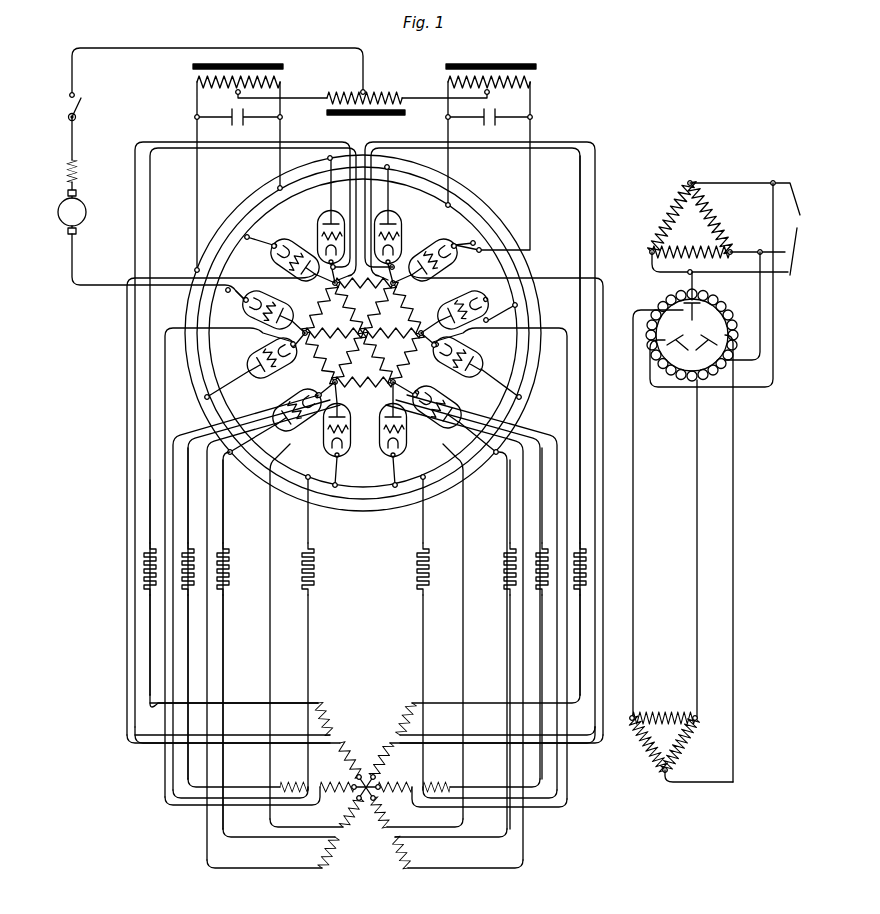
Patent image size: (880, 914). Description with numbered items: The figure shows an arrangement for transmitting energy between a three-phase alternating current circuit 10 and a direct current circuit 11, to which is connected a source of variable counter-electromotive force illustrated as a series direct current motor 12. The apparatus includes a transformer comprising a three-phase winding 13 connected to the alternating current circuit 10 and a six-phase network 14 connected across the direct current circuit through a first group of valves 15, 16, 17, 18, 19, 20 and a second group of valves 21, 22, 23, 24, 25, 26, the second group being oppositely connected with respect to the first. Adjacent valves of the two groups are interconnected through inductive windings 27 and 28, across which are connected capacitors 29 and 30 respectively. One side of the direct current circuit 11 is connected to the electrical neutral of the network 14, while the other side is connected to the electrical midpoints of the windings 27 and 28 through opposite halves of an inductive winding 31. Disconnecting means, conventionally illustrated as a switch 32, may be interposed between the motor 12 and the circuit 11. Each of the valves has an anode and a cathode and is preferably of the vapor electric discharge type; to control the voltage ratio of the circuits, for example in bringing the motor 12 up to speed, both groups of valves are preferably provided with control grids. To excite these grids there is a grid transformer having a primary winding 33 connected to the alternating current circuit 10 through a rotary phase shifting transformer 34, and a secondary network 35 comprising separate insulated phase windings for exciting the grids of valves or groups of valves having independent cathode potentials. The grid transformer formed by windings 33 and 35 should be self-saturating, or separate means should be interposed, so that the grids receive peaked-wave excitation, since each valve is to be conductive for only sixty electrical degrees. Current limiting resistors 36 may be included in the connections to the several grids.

The three-phase alternating current circuit 10 is at (730, 228).
The direct current circuit 11 is at (140, 48).
The series direct current motor 12 is at (86, 212).
The three-phase winding 13 is at (697, 235).
The six-phase network 14 is at (410, 296).
The electric valve 15 is at (398, 220).
The electric valve 16 is at (479, 348).
The electric valve 17 is at (429, 418).
The electric valve 18 is at (306, 436).
The electric valve 19 is at (256, 354).
The electric valve 20 is at (318, 218).
The electric valve 21 is at (434, 248).
The electric valve 22 is at (475, 316).
The electric valve 23 is at (398, 452).
The electric valve 24 is at (340, 457).
The electric valve 25 is at (254, 320).
The electric valve 26 is at (270, 263).
The inductive winding 27 is at (193, 82).
The inductive winding 28 is at (532, 82).
The capacitor 29 is at (245, 121).
The capacitor 30 is at (497, 121).
The inductive winding 31 is at (372, 94).
The switch 32 is at (78, 118).
The primary winding 33 is at (673, 745).
The rotary phase shifting transformer 34 is at (714, 366).
The secondary network 35 is at (375, 861).
The current limiting resistors 36 is at (143, 582).